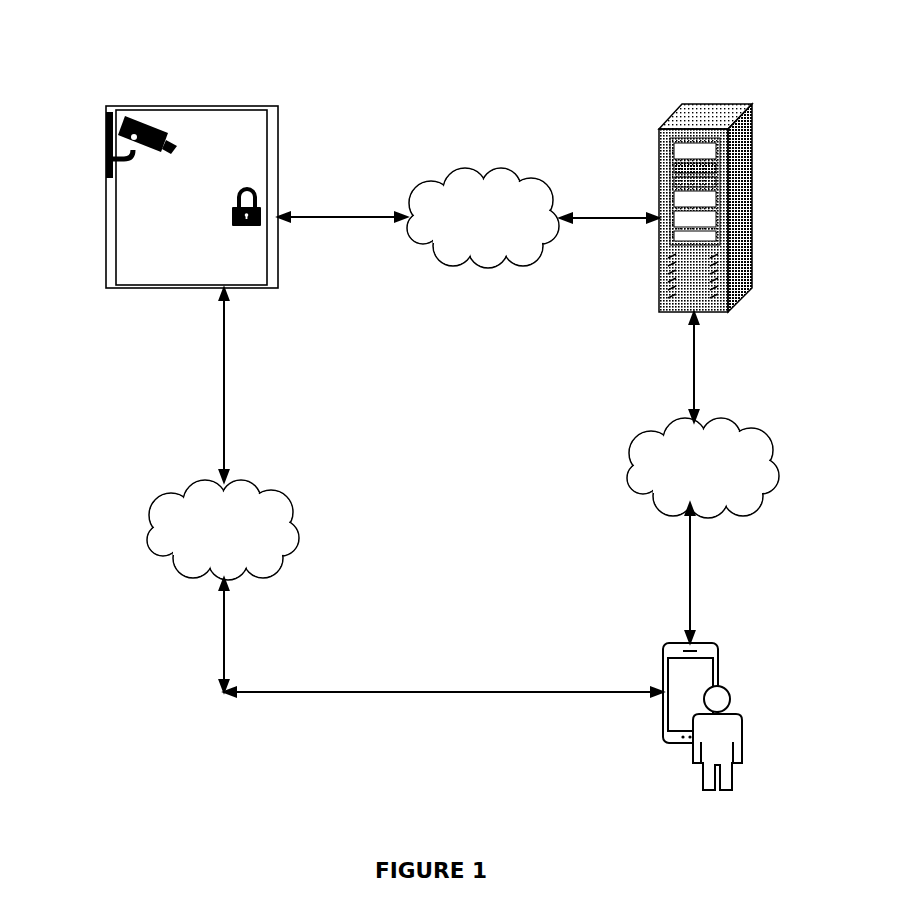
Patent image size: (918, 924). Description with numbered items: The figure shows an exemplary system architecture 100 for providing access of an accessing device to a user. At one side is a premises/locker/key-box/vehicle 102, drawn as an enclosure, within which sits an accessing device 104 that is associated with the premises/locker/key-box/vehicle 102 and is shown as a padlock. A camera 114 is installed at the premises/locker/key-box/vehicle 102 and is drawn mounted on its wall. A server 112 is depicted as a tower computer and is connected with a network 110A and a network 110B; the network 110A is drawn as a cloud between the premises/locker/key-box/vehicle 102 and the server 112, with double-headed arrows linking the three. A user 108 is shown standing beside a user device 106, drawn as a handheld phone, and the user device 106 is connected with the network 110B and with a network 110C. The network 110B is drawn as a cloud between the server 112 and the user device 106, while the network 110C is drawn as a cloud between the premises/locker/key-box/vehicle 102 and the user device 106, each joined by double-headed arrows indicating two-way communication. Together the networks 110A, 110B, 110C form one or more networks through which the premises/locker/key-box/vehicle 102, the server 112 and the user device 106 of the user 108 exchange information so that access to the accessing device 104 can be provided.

The system architecture 100 is at (549, 70).
The premises/locker/key-box/vehicle 102 is at (254, 105).
The accessing device 104 is at (232, 190).
The user device 106 is at (682, 643).
The user 108 is at (733, 712).
The network 110A is at (508, 167).
The network 110B is at (728, 417).
The network 110C is at (147, 527).
The server 112 is at (715, 113).
The camera 114 is at (113, 132).